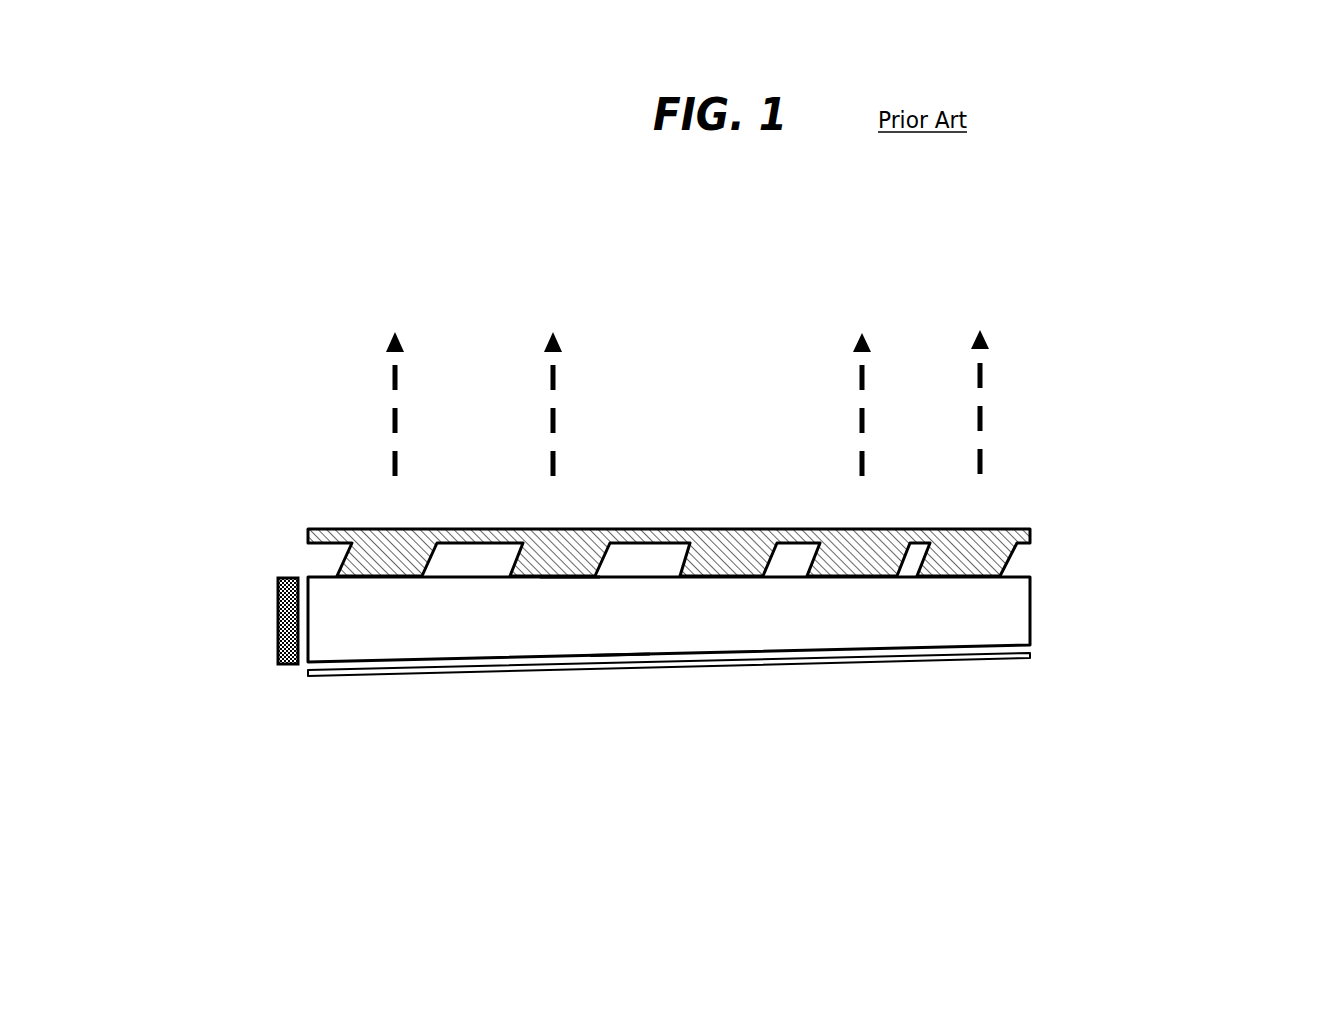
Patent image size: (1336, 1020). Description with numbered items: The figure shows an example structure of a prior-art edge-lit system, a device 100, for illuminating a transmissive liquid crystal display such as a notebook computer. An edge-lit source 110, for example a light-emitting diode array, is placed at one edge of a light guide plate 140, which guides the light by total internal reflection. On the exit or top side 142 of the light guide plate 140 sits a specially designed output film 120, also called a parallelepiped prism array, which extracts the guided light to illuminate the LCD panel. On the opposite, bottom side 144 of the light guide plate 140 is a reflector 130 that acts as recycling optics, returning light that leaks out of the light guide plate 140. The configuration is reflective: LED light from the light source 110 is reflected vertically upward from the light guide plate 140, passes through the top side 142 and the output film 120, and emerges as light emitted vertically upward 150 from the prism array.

The device 100 is at (1175, 398).
The edge-lit source 110 is at (216, 639).
The output film 120 is at (835, 528).
The reflector 130 is at (635, 667).
The light guide plate 140 is at (1050, 617).
The exit (top) side 142 is at (567, 580).
The opposite (bottom) side 144 is at (617, 652).
The vertically upward emitted light 150 is at (392, 422).